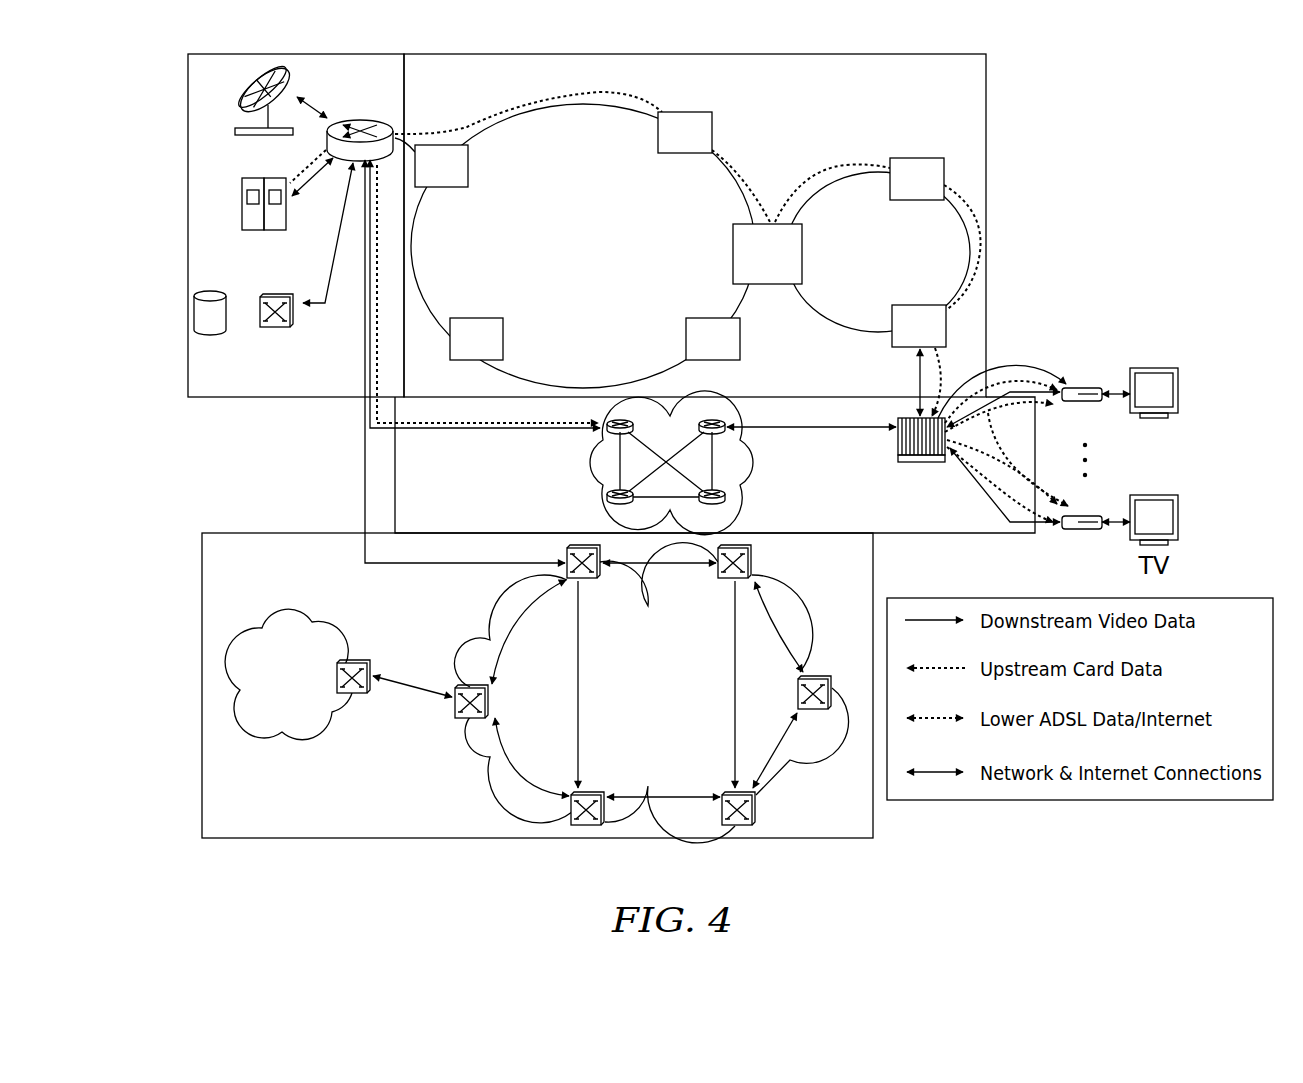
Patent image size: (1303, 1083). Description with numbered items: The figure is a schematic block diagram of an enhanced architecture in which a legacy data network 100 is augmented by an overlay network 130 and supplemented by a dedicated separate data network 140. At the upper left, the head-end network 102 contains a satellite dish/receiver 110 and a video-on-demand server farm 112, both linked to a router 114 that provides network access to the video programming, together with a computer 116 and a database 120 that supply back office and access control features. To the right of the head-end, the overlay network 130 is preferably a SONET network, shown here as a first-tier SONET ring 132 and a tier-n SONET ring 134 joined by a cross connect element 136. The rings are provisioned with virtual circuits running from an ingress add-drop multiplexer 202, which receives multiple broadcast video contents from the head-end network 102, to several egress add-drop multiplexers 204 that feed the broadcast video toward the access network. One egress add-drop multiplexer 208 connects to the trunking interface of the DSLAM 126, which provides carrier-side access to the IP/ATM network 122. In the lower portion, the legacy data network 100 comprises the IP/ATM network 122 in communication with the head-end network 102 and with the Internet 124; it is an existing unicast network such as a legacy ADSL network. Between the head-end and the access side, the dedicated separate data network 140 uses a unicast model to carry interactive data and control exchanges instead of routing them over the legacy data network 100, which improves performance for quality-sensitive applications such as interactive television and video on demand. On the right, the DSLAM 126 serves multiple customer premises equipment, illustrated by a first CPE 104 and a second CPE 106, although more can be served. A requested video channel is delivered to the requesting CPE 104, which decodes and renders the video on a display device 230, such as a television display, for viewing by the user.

The legacy data network 100 is at (325, 838).
The head-end network 102 is at (337, 54).
The CPE 104 is at (1078, 388).
The CPE 106 is at (1080, 529).
The satellite dish/receiver 110 is at (243, 97).
The video-on-demand server farm 112 is at (242, 198).
The router 114 is at (356, 120).
The computer 116 is at (258, 300).
The database 120 is at (195, 316).
The IP/ATM network 122 is at (697, 826).
The Internet 124 is at (297, 612).
The DSLAM 126 is at (918, 462).
The overlay network 130 is at (870, 54).
The first-tier SONET ring 132 is at (604, 191).
The tier-n SONET ring 134 is at (886, 247).
The cross connect element 136 is at (768, 285).
The dedicated separate data network 140 is at (595, 460).
The ingress add-drop multiplexer 202 is at (468, 168).
The egress add-drop multiplexers 204 is at (712, 120).
The egress add-drop multiplexer 208 is at (918, 305).
The display device 230 is at (1148, 368).